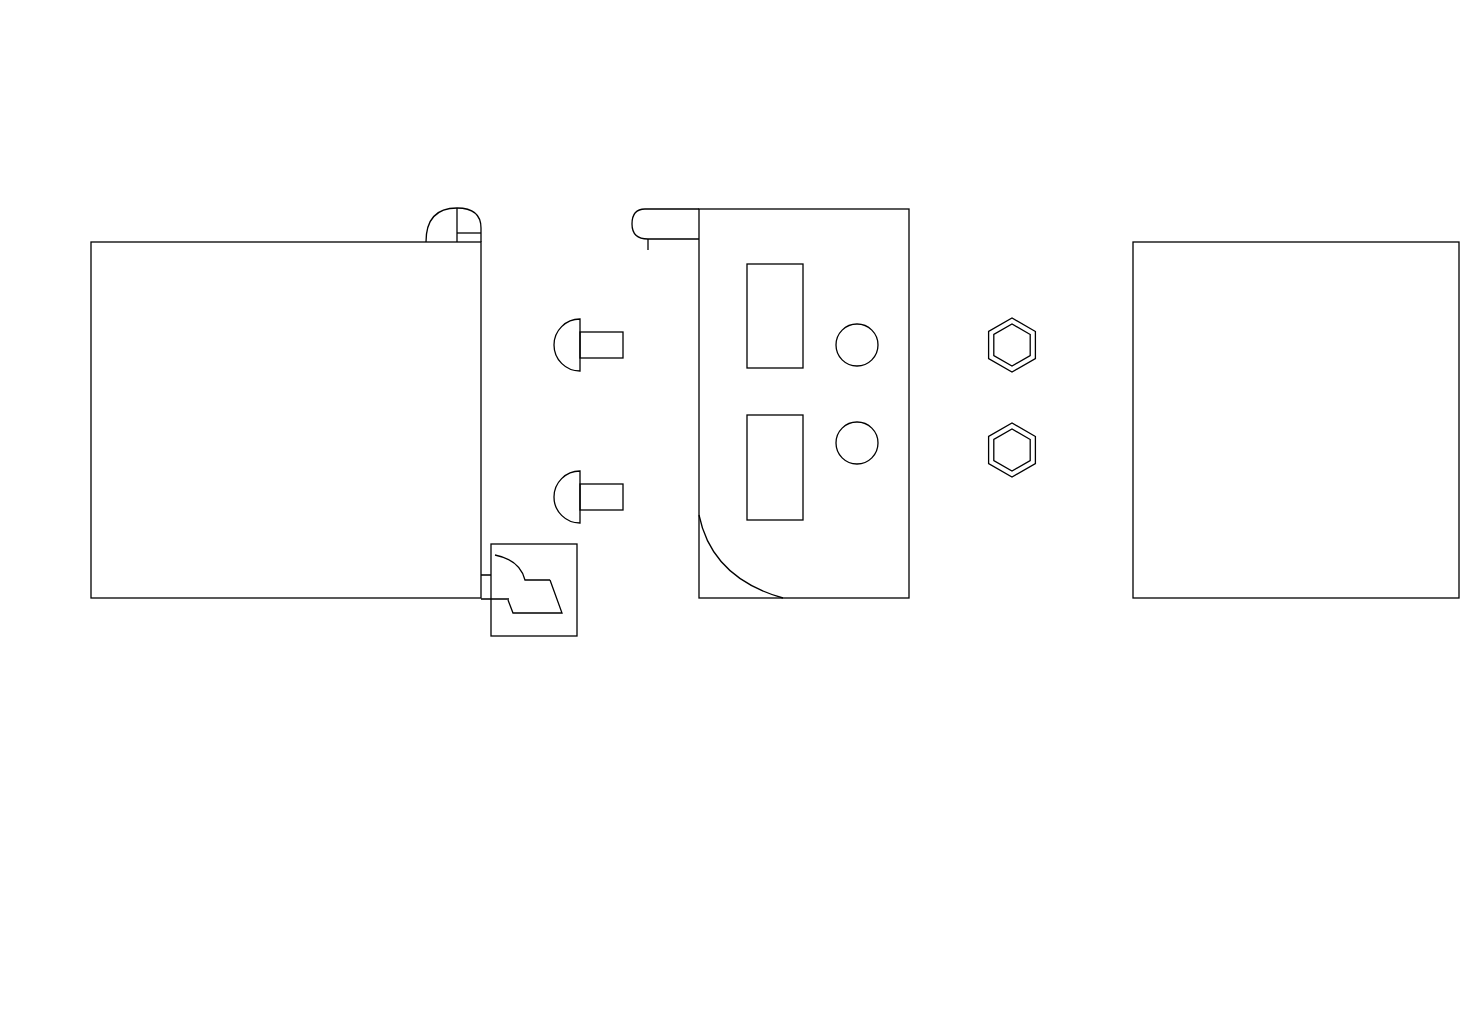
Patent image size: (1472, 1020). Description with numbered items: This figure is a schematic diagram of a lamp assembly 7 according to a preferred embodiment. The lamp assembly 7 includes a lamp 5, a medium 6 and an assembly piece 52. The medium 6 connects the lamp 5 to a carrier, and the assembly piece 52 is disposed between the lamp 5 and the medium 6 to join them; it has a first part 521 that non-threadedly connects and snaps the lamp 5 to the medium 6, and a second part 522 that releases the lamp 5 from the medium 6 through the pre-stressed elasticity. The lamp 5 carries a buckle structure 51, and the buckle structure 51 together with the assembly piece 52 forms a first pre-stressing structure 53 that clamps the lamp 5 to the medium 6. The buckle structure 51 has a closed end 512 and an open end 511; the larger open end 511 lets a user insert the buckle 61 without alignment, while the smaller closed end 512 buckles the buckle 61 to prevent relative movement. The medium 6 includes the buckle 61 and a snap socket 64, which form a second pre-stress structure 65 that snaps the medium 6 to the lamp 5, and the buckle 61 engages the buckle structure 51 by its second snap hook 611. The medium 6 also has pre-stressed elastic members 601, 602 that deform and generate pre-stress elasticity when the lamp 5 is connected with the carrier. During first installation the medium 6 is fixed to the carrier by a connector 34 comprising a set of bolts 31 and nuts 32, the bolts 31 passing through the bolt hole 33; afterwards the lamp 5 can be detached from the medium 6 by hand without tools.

The lamp 5 is at (339, 684).
The medium 6 is at (759, 668).
The lamp assembly 7 is at (692, 767).
The bolts 31 is at (562, 365).
The nuts 32 is at (1033, 358).
The bolt hole 33 is at (876, 360).
The connector 34 is at (1057, 650).
The buckle structure 51 is at (515, 118).
The open end 511 is at (475, 212).
The closed end 512 is at (435, 210).
The assembly piece 52 is at (488, 648).
The first part 521 is at (510, 562).
The second part 522 is at (535, 605).
The first pre-stressing structure 53 is at (208, 692).
The buckle 61 is at (677, 214).
The second snap hook 611 is at (640, 244).
The snap socket 64 is at (715, 594).
The second pre-stress structure 65 is at (1000, 98).
The pre-stressed elastic member 601 is at (776, 264).
The pre-stressed elastic member 602 is at (780, 520).